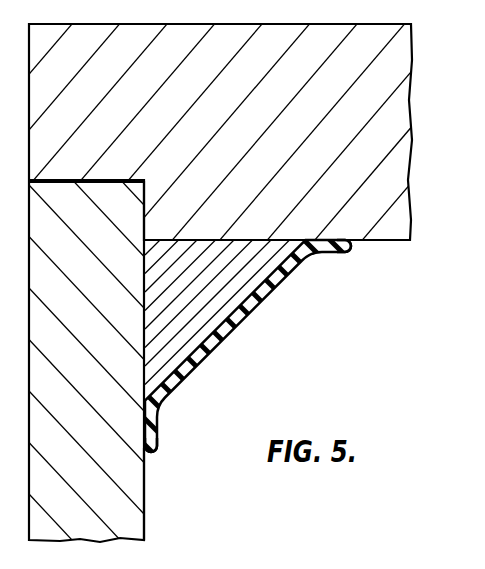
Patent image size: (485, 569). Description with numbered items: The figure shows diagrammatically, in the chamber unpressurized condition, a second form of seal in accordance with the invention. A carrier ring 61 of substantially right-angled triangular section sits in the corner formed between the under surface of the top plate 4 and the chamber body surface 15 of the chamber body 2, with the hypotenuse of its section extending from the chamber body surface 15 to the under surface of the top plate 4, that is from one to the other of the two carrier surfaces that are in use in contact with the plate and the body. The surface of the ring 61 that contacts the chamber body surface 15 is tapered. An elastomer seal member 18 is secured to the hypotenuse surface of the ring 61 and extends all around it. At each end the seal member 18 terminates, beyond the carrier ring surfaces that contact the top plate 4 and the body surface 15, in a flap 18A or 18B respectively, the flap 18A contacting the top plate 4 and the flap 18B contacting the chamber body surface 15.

The top plate 4 is at (304, 119).
The lower housing part 2 is at (93, 483).
The chamber body surface 15 is at (147, 473).
The carrier ring 61 is at (192, 275).
The elastomer seal member 18 is at (203, 350).
The flap 18A is at (329, 253).
The flap 18B is at (160, 416).